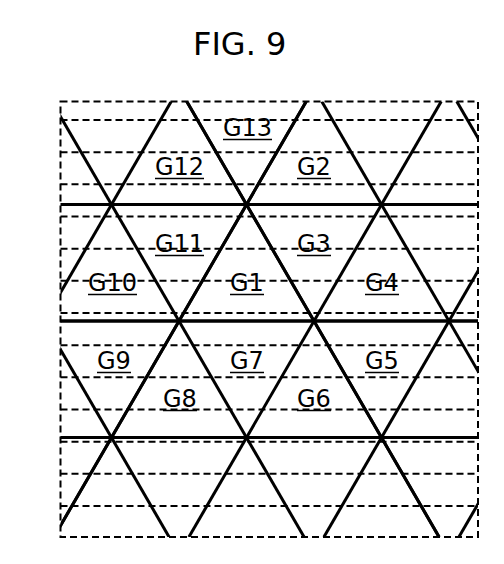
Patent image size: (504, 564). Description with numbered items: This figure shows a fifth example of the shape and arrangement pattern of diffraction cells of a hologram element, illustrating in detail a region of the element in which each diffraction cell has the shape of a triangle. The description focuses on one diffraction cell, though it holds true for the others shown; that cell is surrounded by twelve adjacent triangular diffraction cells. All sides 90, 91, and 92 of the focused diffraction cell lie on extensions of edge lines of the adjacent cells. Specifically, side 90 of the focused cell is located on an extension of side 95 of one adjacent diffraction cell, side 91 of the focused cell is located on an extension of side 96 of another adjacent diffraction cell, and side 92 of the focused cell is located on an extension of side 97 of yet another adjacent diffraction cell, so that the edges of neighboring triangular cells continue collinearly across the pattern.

The side 90 is at (288, 275).
The side 91 is at (207, 322).
The side 92 is at (208, 275).
The side 95 is at (355, 390).
The side 96 is at (107, 322).
The side 97 is at (290, 131).